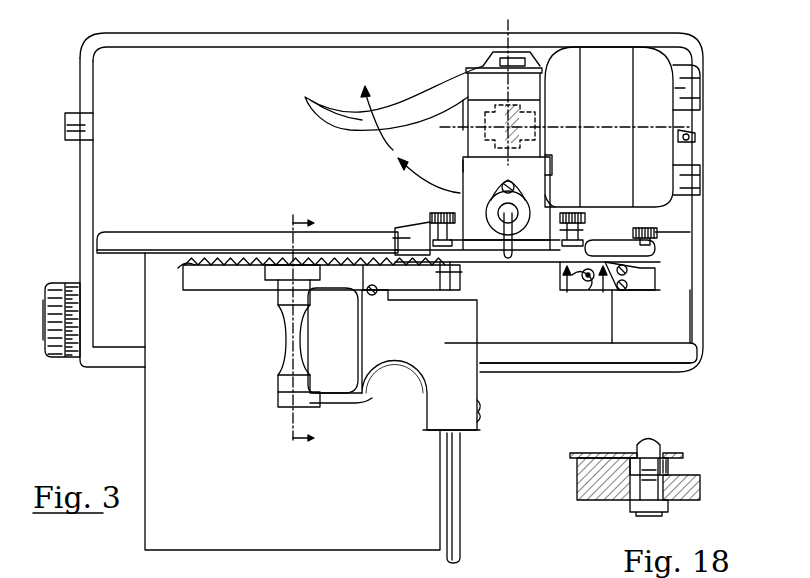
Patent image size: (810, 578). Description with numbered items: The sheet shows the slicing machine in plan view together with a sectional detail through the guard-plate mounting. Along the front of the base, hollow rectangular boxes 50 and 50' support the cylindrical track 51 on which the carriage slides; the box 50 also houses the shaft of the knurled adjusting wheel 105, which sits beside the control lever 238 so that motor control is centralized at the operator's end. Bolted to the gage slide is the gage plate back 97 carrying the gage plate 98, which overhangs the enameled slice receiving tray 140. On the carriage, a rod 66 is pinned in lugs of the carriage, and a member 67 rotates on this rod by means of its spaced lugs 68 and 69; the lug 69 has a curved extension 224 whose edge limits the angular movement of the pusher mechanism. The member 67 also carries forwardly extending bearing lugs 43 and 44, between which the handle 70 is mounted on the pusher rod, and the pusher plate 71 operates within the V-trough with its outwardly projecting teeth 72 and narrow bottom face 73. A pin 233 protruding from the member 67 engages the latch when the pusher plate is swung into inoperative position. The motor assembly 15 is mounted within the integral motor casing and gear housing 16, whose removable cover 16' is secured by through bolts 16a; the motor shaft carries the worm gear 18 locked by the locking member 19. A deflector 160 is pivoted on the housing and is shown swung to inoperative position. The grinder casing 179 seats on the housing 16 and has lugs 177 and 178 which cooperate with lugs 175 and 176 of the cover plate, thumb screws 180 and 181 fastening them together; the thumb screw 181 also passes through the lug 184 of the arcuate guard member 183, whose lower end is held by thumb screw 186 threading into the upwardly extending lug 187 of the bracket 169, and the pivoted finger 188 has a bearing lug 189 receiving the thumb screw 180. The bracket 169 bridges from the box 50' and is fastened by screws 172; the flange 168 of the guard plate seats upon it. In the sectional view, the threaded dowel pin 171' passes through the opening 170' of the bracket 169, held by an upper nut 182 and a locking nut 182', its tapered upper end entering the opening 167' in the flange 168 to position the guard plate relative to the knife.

In FIG. 3, the slice receiving tray 140 is at (391, 202).
In FIG. 3, the control lever 238 is at (65, 115).
In FIG. 3, the knurled adjusting wheel 105 is at (55, 358).
In FIG. 3, the gage plate back 97 is at (213, 242).
In FIG. 3, the gage plate 98 is at (131, 250).
In FIG. 3, the hollow rectangular box 50 is at (229, 391).
In FIG. 3, the teeth or prongs 72 is at (240, 262).
In FIG. 3, the pusher plate 71 is at (172, 271).
In FIG. 3, the bottom face 73 is at (228, 290).
In FIG. 3, the pin 233 is at (372, 296).
In FIG. 3, the handle 70 is at (285, 355).
In FIG. 3, the locking member 19 is at (316, 330).
In FIG. 3, the bearing lug 43 is at (330, 296).
In FIG. 3, the member 67 is at (402, 352).
In FIG. 3, the bearing lug 44 is at (318, 405).
In FIG. 3, the rod 66 is at (455, 496).
In FIG. 3, the bearing lug 69 is at (467, 437).
In FIG. 3, the curved extension 224 is at (456, 376).
In FIG. 3, the electric motor assembly 15 is at (608, 60).
In FIG. 3, the deflector 160 is at (394, 106).
In FIG. 3, the bearing lug 189 is at (410, 140).
In FIG. 3, the motor casing and gear housing 16 is at (600, 108).
In FIG. 3, the removable cover 16' is at (700, 72).
In FIG. 3, the through bolts 16a is at (660, 184).
In FIG. 3, the lug 178 is at (578, 258).
In FIG. 3, the lug 68 is at (466, 282).
In FIG. 3, the lug 175 is at (438, 264).
In FIG. 3, the lug 177 is at (416, 228).
In FIG. 3, the pivoted finger 188 is at (395, 240).
In FIG. 3, the thumb screw 180 is at (440, 208).
In FIG. 3, the grinder casing 179 is at (552, 198).
In FIG. 3, the thumb screw 181 is at (582, 222).
In FIG. 3, the guard member 183 is at (618, 243).
In FIG. 3, the lug 184 is at (620, 237).
In FIG. 3, the thumb screw 186 is at (660, 232).
In FIG. 3, the lug 176 is at (580, 268).
In FIG. 3, the upwardly extending lug 187 is at (645, 266).
In FIG. 3, the screws 172 is at (620, 291).
In FIG. 3, the worm gear 18 is at (588, 294).
In FIG. 3, the hollow rectangular box 50' is at (679, 318).
In FIG. 3, the track 51 is at (640, 356).
In FIG. 18, the flange 168 is at (585, 453).
In FIG. 18, the bracket 169 is at (578, 481).
In FIG. 18, the opening 170' is at (631, 506).
In FIG. 18, the threaded dowel pin 171' is at (675, 435).
In FIG. 18, the openings 167' is at (637, 456).
In FIG. 18, the upper nuts 182 is at (703, 462).
In FIG. 18, the locking nuts 182' is at (683, 513).